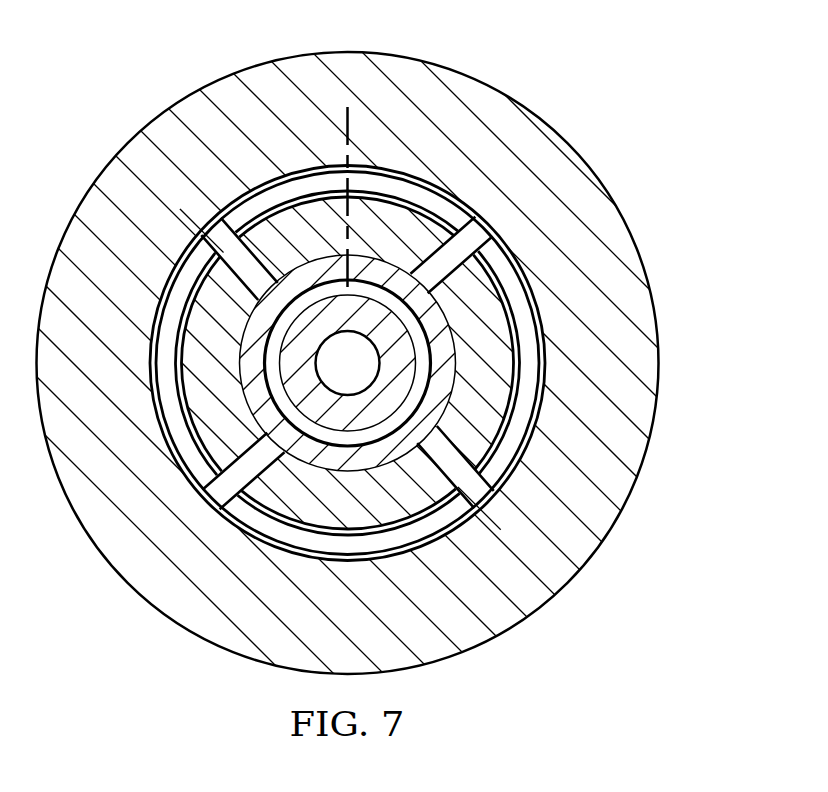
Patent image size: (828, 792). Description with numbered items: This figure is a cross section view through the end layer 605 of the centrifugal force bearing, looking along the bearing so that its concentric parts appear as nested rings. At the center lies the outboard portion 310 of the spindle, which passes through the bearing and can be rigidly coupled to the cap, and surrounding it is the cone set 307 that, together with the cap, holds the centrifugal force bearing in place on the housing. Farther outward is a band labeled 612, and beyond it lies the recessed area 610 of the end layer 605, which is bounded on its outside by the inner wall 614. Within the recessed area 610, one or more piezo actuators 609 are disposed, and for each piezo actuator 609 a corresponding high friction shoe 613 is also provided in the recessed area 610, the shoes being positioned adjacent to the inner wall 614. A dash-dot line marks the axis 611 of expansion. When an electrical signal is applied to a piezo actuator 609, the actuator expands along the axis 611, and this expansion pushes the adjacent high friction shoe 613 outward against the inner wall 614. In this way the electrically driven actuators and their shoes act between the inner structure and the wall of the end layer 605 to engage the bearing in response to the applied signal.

The end layer 605 is at (302, 62).
The inner wall 614 is at (537, 303).
The piezo actuator 609 is at (240, 203).
The high friction shoe 613 is at (262, 233).
The recessed area 610 is at (473, 239).
The sleeve 612 is at (442, 370).
The cone set 307 is at (350, 438).
The outboard portion 310 is at (290, 378).
The axis 611 is at (349, 118).